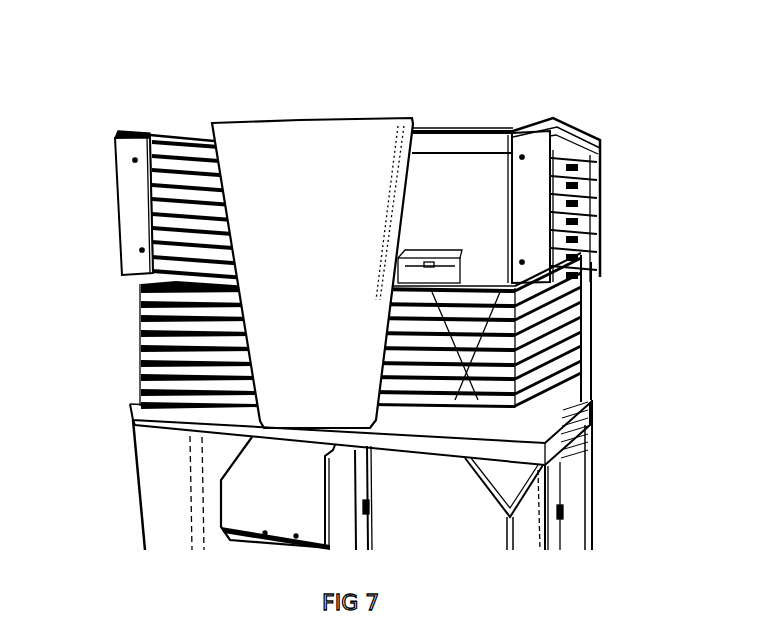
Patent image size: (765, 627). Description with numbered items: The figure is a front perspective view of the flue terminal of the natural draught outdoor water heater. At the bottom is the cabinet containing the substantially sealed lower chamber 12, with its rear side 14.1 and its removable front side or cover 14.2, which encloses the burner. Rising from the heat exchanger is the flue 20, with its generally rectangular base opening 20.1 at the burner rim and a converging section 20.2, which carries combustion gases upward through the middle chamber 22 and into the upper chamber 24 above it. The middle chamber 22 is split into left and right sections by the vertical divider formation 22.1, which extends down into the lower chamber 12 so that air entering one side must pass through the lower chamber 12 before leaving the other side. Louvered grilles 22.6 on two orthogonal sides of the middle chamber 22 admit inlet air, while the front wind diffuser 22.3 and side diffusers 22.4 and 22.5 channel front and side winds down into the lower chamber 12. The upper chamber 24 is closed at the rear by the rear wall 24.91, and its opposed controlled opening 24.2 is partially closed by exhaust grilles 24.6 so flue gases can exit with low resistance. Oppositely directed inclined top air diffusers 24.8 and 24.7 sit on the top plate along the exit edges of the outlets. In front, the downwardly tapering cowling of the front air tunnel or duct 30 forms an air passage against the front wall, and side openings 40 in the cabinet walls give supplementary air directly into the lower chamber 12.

The lower chamber 12 is at (599, 478).
The rear side 14.1 is at (575, 473).
The front side or cover 14.2 is at (162, 464).
The flue 20 is at (242, 488).
The base opening 20.1 is at (525, 520).
The converging section 20.2 is at (518, 480).
The middle chamber 22 is at (364, 331).
The divider formation 22.1 is at (350, 490).
The front wind diffuser 22.3 is at (476, 268).
The side diffuser 22.4 is at (565, 290).
The side diffuser 22.5 is at (150, 283).
The grilles 22.6 is at (143, 355).
The upper chamber 24 is at (604, 212).
The controlled opening 24.2 is at (590, 190).
The exhaust grilles 24.6 is at (173, 207).
The top air diffuser 24.7 is at (578, 130).
The top air diffuser 24.8 is at (122, 136).
The rear wall 24.91 is at (435, 165).
The front air tunnel or duct 30 is at (305, 143).
The side openings 40 is at (588, 435).